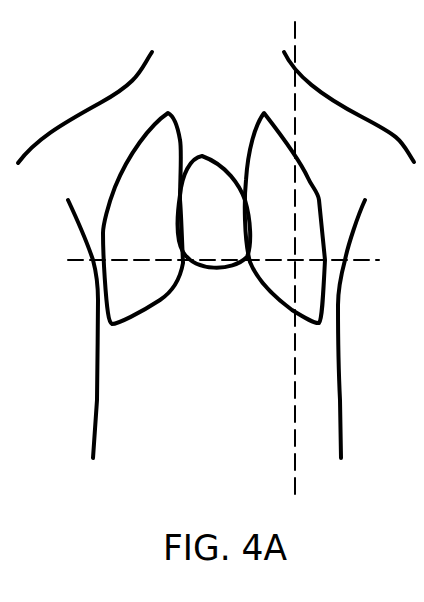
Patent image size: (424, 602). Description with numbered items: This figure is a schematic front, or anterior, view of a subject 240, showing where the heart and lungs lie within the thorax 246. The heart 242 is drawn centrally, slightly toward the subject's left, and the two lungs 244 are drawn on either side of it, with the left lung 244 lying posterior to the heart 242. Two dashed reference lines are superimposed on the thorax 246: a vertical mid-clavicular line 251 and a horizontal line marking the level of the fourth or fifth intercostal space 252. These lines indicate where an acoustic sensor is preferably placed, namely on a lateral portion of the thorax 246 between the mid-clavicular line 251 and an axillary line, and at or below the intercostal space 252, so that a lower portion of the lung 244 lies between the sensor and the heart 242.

The subject 240 is at (97, 107).
The heart 242 is at (200, 155).
The lungs 244 is at (125, 191).
The thorax 246 is at (324, 355).
The mid-clavicular line 251 is at (295, 53).
The fourth or fifth intercostal space 252 is at (354, 263).